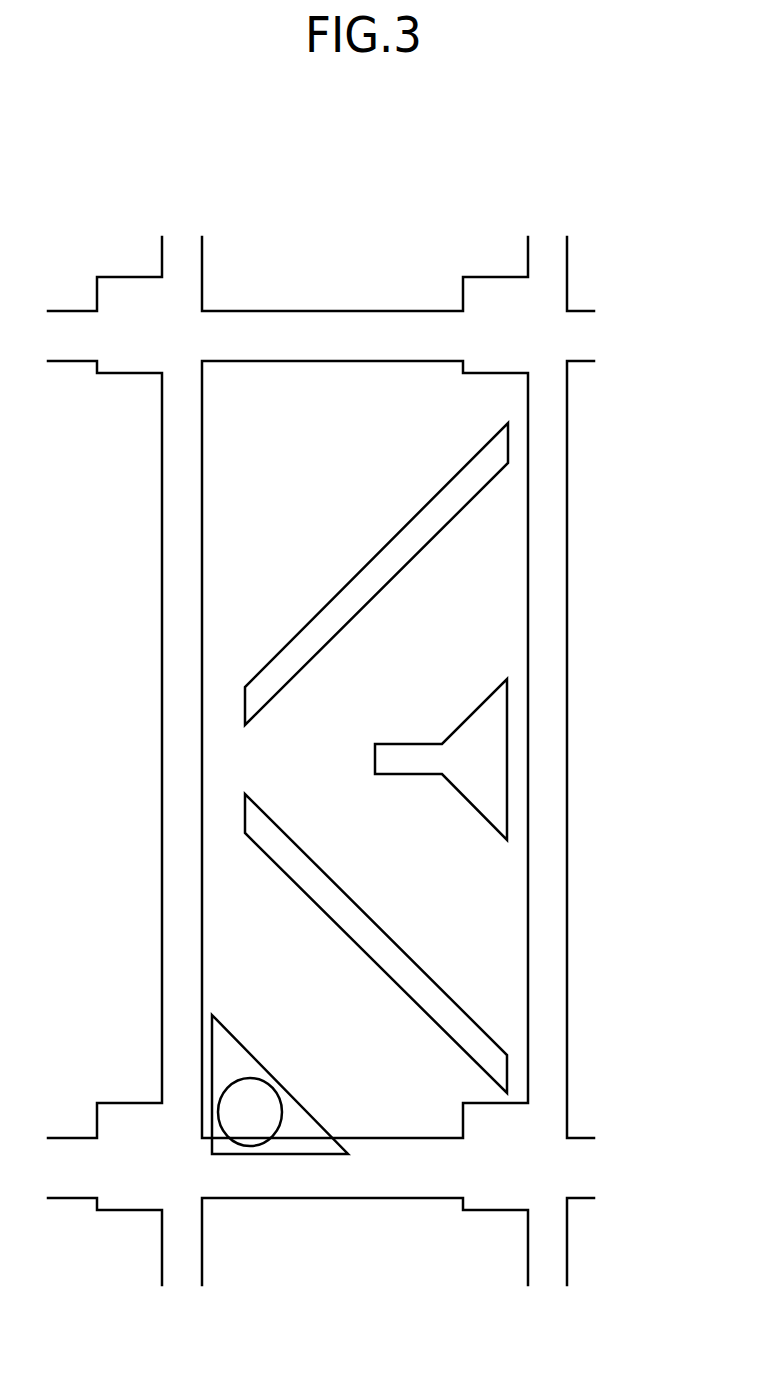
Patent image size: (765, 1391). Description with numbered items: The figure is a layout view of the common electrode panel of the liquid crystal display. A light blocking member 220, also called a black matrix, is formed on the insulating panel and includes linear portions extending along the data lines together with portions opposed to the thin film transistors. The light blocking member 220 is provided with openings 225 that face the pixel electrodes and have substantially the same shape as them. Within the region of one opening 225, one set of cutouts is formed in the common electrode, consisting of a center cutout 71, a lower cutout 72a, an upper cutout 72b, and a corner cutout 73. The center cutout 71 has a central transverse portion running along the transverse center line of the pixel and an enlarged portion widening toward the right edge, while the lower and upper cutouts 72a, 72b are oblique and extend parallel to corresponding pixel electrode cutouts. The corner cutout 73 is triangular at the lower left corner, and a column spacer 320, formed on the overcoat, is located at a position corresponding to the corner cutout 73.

The light blocking member 220 is at (567, 748).
The opening 225 is at (470, 951).
The center cutout 71 is at (417, 742).
The lower cutout 72a is at (375, 923).
The upper cutout 72b is at (378, 553).
The corner cutout 73 is at (292, 1093).
The column spacer 320 is at (236, 1146).